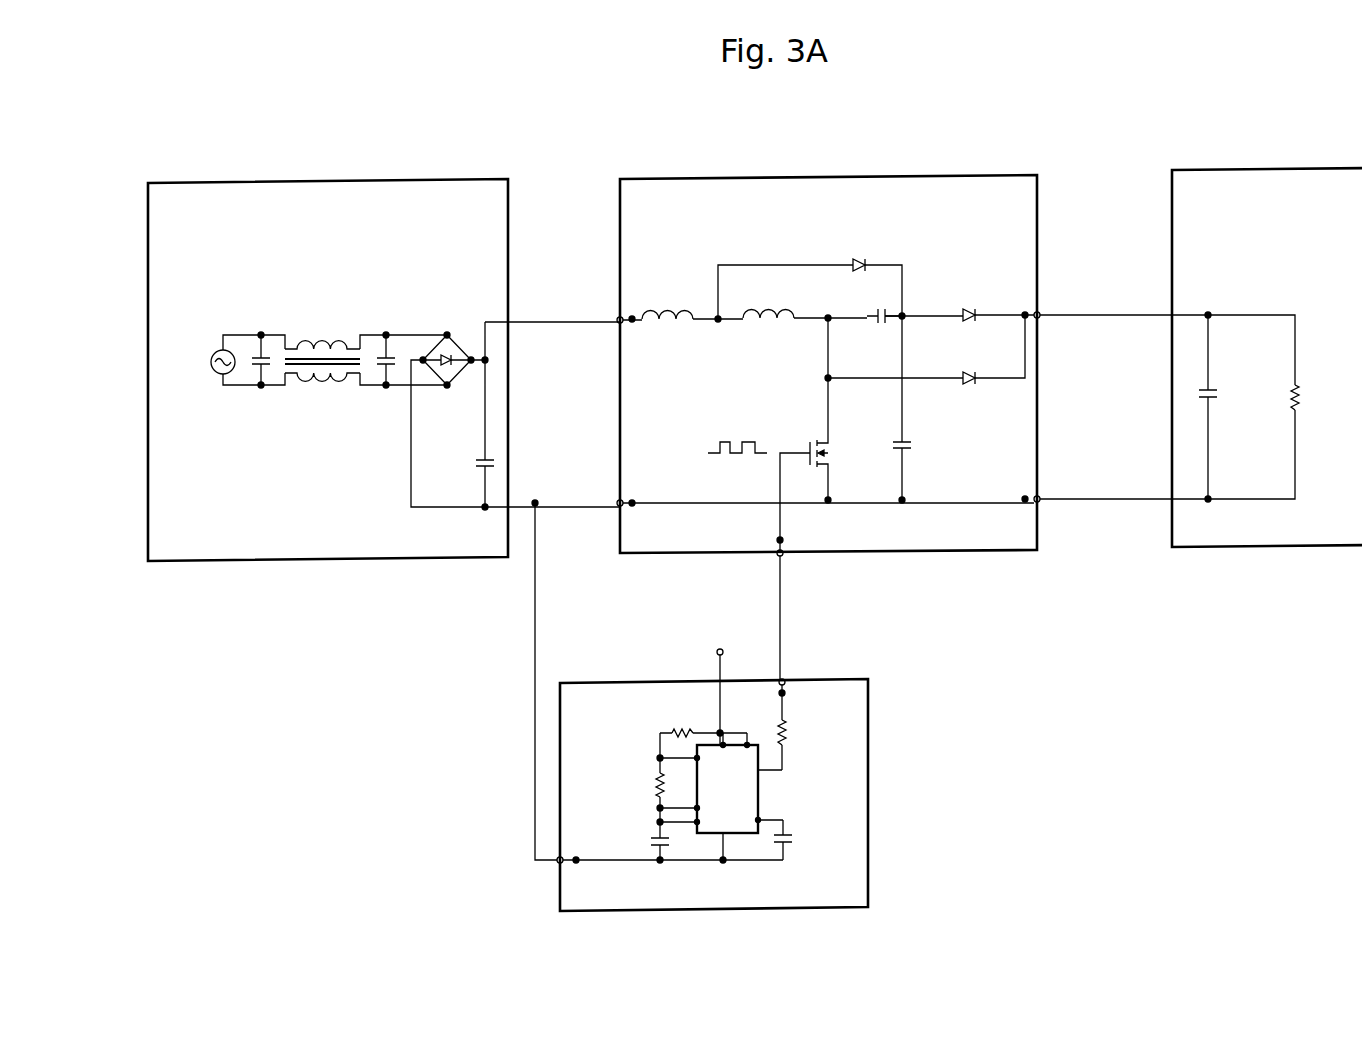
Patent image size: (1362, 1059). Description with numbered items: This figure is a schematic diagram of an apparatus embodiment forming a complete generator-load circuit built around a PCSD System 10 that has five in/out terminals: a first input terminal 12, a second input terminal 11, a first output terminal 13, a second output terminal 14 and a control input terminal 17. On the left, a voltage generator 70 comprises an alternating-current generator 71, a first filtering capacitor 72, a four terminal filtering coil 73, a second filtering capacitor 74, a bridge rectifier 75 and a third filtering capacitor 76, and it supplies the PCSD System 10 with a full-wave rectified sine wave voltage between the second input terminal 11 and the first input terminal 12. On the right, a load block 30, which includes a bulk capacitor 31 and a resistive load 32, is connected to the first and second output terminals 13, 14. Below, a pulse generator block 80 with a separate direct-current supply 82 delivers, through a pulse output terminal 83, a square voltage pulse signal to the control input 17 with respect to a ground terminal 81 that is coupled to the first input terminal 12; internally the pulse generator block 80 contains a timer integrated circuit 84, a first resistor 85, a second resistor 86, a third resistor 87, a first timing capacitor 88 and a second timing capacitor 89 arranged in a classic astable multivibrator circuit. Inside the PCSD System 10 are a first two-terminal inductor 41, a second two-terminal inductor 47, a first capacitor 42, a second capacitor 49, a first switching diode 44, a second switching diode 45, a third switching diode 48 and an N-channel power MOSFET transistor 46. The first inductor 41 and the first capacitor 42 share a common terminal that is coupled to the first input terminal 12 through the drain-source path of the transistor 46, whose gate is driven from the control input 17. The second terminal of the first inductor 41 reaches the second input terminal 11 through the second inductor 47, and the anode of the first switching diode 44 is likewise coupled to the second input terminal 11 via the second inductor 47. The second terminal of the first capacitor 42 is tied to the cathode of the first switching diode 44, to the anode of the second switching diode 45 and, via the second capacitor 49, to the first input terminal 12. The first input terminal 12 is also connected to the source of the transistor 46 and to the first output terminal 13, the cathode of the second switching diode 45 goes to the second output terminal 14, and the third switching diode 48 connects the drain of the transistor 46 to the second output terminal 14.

The voltage generator VG 70 is at (157, 160).
The PCSD System 10 is at (627, 153).
The Zload block 30 is at (1167, 147).
The AC generator Gac 71 is at (208, 342).
The first filtering capacitor Cf1 72 is at (258, 328).
The four terminal filtering coil Lf 73 is at (320, 328).
The second filtering capacitor Cf2 74 is at (383, 328).
The bridge rectifier BR 75 is at (445, 328).
The third filtering capacitor Cf3 76 is at (470, 460).
The second input terminal Vin1 11 is at (593, 337).
The first input terminal Vin0 12 is at (593, 523).
The first output terminal Vout0 13 is at (1047, 516).
The second output terminal Vout1 14 is at (1047, 332).
The control input terminal G 17 is at (792, 569).
The second two-terminal inductor L2 47 is at (672, 330).
The first two-terminal inductor L1 41 is at (760, 328).
The first capacitor C1 42 is at (875, 328).
The first switching diode D1 44 is at (868, 255).
The second switching diode D2 45 is at (962, 295).
The N-channel power MOSFET transistor Q1 46 is at (812, 428).
The third switching diode D3 48 is at (963, 360).
The second capacitor C2 49 is at (920, 440).
The bulk capacitor CL 31 is at (1218, 370).
The resistive load RL 32 is at (1307, 368).
The pulse generator block Gps 80 is at (595, 672).
The GND terminal 81 is at (542, 878).
The separate DC supply +Vcc 82 is at (705, 657).
The Vps output terminal 83 is at (792, 662).
The 555 Timer IC 84 is at (770, 787).
The resistor Rg1 85 is at (655, 722).
The resistor Rg2 86 is at (645, 795).
The resistor Rg3 87 is at (807, 737).
The capacitor Cg1 88 is at (645, 873).
The capacitor Cg2 89 is at (795, 850).